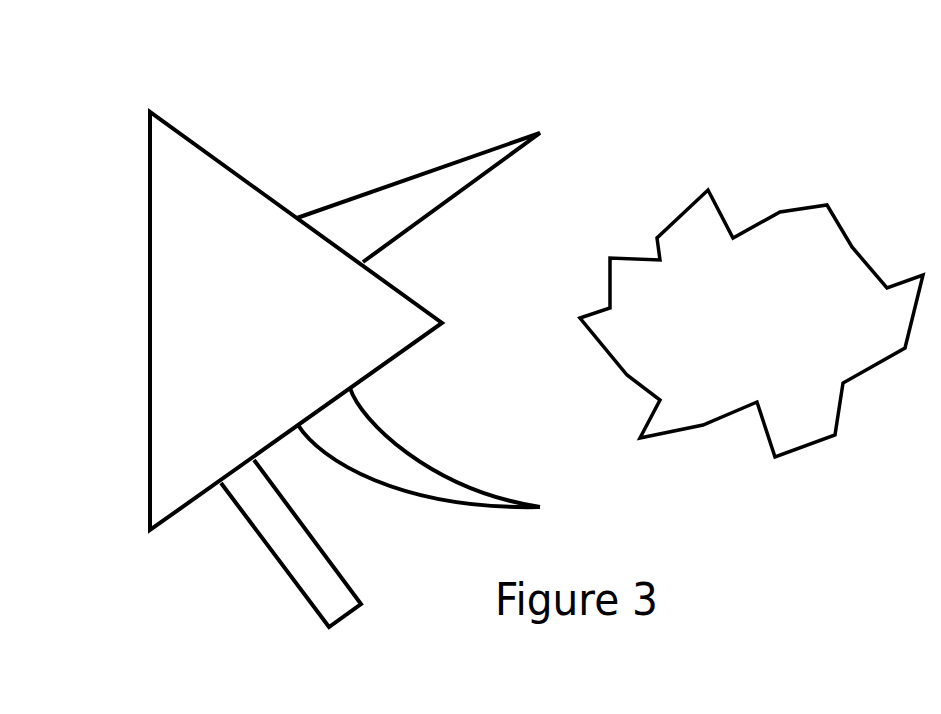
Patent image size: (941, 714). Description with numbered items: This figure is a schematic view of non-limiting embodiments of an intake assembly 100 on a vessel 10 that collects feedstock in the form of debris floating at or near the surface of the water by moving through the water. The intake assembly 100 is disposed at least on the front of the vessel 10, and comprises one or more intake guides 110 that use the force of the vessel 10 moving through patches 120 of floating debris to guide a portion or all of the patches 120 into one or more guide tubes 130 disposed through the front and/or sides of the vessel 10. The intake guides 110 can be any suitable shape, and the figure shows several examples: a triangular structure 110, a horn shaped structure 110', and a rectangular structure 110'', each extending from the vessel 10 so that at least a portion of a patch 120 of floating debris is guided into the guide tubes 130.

The vessel 10 is at (246, 332).
The intake assembly 100 is at (452, 123).
The intake guide 110 is at (418, 181).
The horn shaped structure 110' is at (419, 478).
The rectangular structure 110'' is at (285, 543).
The patch of floating debris 120 is at (751, 323).
The guide tube 130 is at (336, 229).